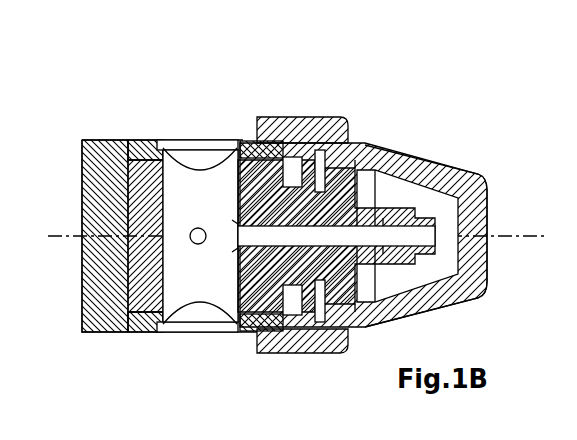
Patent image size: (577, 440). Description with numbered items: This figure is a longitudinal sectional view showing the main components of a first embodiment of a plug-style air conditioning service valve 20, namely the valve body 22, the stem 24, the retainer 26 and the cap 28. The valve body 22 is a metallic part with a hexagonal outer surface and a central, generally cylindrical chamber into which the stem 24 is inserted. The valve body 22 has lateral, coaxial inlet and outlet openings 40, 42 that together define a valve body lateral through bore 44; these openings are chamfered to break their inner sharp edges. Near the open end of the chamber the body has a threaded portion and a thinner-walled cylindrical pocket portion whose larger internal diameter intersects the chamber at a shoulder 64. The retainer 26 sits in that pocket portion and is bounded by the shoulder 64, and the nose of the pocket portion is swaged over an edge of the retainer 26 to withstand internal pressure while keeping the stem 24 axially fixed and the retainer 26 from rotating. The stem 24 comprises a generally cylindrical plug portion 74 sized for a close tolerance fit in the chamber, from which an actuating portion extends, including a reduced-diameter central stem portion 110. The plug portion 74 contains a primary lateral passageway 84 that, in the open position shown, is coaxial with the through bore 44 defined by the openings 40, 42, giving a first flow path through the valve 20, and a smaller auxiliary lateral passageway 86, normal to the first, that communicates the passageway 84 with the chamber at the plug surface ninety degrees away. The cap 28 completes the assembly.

The plug-style air conditioning service valve 20 is at (323, 65).
The valve body 22 is at (104, 147).
The stem 24 is at (387, 148).
The retainer 26 is at (322, 126).
The cap 28 is at (452, 170).
The inlet opening 40 is at (167, 142).
The outlet opening 42 is at (172, 326).
The valve body lateral through bore 44 is at (202, 156).
The shoulder 64 is at (280, 148).
The plug portion 74 is at (147, 305).
The first lateral passageway 84 is at (185, 288).
The second lateral passageway 86 is at (199, 228).
The central stem portion 110 is at (353, 147).